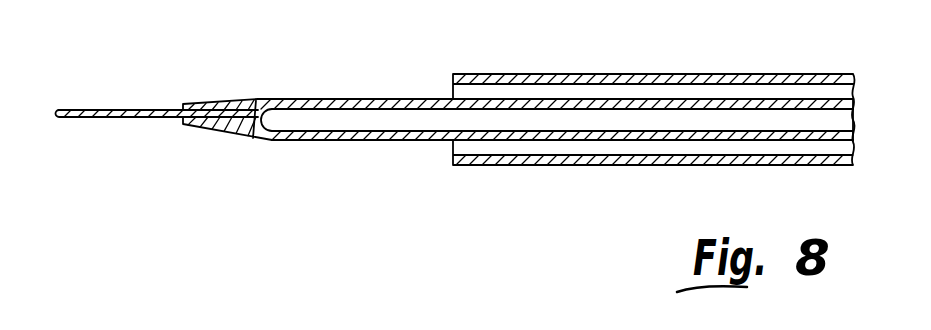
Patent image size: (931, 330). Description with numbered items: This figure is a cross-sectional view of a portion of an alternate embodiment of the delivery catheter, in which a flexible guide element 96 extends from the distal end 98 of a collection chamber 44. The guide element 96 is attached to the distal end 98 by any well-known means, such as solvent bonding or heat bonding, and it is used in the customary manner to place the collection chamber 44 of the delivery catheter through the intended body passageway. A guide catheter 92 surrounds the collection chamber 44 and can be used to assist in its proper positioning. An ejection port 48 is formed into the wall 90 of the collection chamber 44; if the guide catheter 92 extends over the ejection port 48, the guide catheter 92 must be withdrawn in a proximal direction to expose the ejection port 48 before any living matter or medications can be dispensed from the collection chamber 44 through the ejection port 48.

The guide element 96 is at (96, 109).
The distal end 98 is at (259, 98).
The ejection port 48 is at (345, 98).
The collection chamber 44 is at (363, 141).
The wall 90 is at (414, 99).
The guide catheter 92 is at (651, 74).